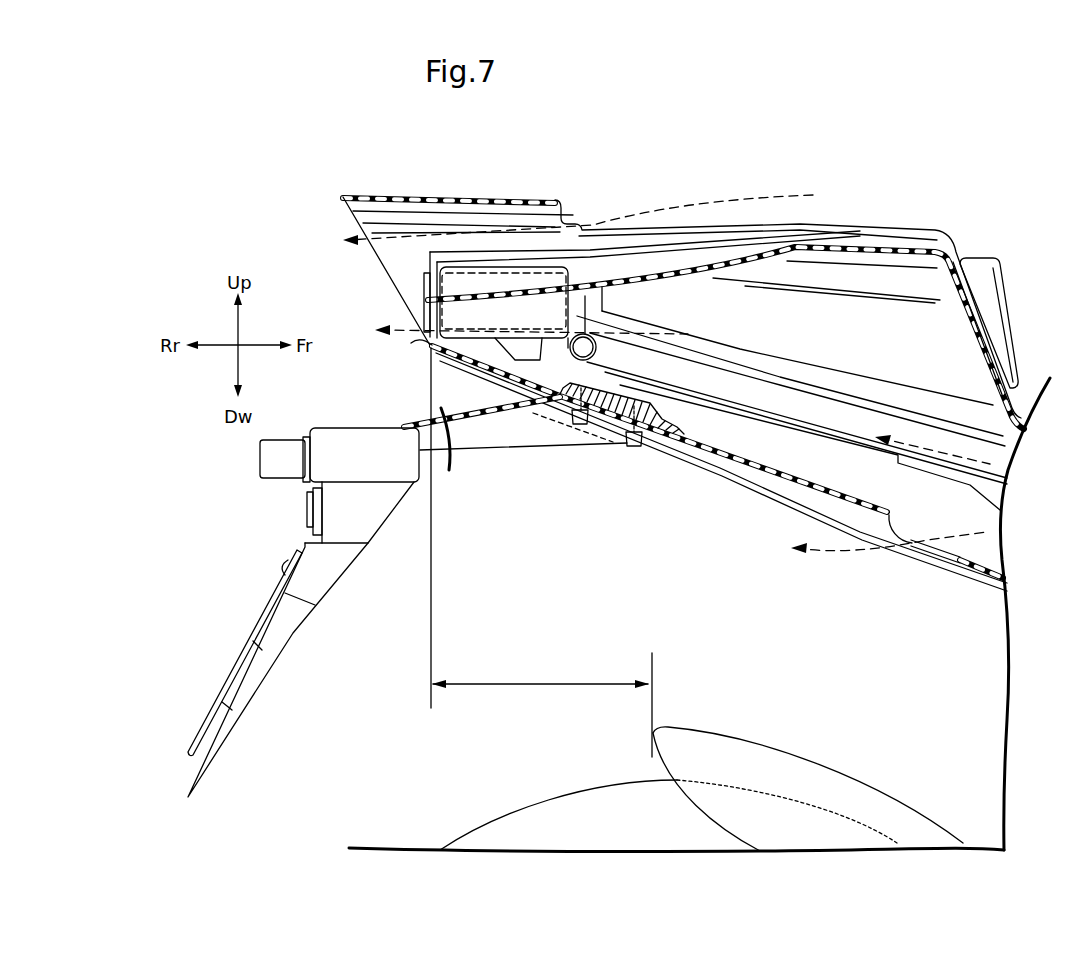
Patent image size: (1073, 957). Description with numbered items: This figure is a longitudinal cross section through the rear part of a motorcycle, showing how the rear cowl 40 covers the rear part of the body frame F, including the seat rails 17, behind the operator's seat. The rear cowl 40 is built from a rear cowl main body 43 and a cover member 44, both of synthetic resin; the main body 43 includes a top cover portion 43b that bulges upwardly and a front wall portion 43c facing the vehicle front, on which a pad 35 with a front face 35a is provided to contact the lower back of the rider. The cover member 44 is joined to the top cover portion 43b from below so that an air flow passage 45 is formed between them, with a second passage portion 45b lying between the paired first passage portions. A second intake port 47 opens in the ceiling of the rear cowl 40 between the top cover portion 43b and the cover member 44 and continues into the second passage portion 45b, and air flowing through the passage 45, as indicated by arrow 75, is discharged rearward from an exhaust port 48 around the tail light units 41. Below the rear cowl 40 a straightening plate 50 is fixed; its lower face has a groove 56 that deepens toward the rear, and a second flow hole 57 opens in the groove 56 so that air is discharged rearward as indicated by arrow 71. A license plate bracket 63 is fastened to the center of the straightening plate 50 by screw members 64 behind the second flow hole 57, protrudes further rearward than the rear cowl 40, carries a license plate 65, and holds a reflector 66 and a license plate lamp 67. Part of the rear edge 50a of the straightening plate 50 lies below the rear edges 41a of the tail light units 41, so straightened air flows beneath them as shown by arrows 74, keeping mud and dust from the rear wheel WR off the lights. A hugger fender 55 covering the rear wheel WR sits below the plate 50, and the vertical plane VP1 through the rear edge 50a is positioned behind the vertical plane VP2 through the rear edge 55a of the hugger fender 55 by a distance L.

The rear cowl 40 is at (630, 157).
The rear cowl main body 43 is at (536, 198).
The cover member 44 is at (628, 268).
The air flow passage 45 is at (486, 208).
The arrow 75 is at (412, 240).
The exhaust port 48 is at (392, 257).
The top cover portion 43b is at (863, 229).
The front wall portion 43c is at (985, 288).
The pad 35 is at (990, 310).
The front face 35a is at (1014, 352).
The second intake port 47 is at (577, 219).
The tail light units 41 is at (535, 338).
The rear edges 41a is at (430, 302).
The second passage portion 45b is at (503, 243).
The seat rails 17 is at (767, 390).
The body frame F is at (843, 401).
The straightening plate 50 is at (777, 465).
The second flow hole 57 is at (947, 565).
The groove 56 is at (714, 447).
The arrow 71 is at (860, 553).
The rear edge 50a is at (427, 347).
The arrows 74 is at (459, 353).
The screw members 64 is at (630, 444).
The license plate bracket 63 is at (475, 422).
The reflector 66 is at (285, 440).
The license plate lamp 67 is at (307, 511).
The license plate 65 is at (262, 608).
The vertical plane VP1 is at (430, 617).
The vertical plane VP2 is at (654, 668).
The distance L is at (538, 683).
The hugger fender 55 is at (800, 773).
The rear edge 55a is at (650, 735).
The rear wheel WR is at (510, 830).